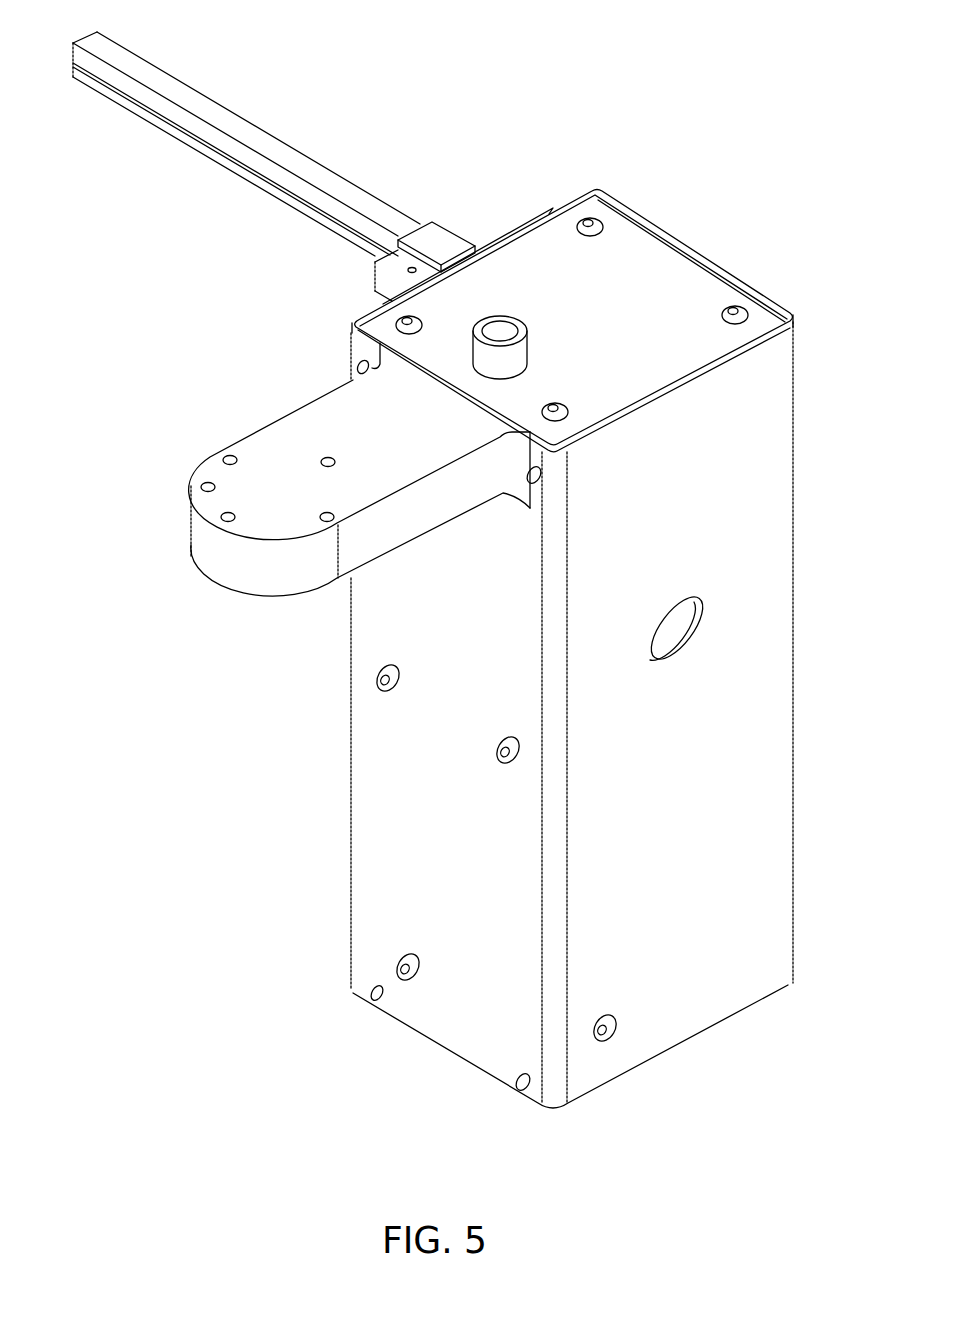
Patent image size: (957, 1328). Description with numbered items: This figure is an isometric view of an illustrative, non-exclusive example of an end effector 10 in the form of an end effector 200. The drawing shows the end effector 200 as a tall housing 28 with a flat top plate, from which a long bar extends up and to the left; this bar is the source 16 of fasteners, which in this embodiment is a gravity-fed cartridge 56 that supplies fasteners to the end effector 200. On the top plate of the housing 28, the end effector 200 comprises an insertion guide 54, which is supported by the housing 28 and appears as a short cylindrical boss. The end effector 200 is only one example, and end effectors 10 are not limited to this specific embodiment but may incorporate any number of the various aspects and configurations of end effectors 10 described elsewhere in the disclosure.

The end effector 10 is at (761, 46).
The end effector 200 is at (738, 115).
The source 16 is at (246, 144).
The gravity-fed cartridge 56 is at (260, 128).
The insertion guide 54 is at (523, 330).
The housing 28 is at (795, 456).